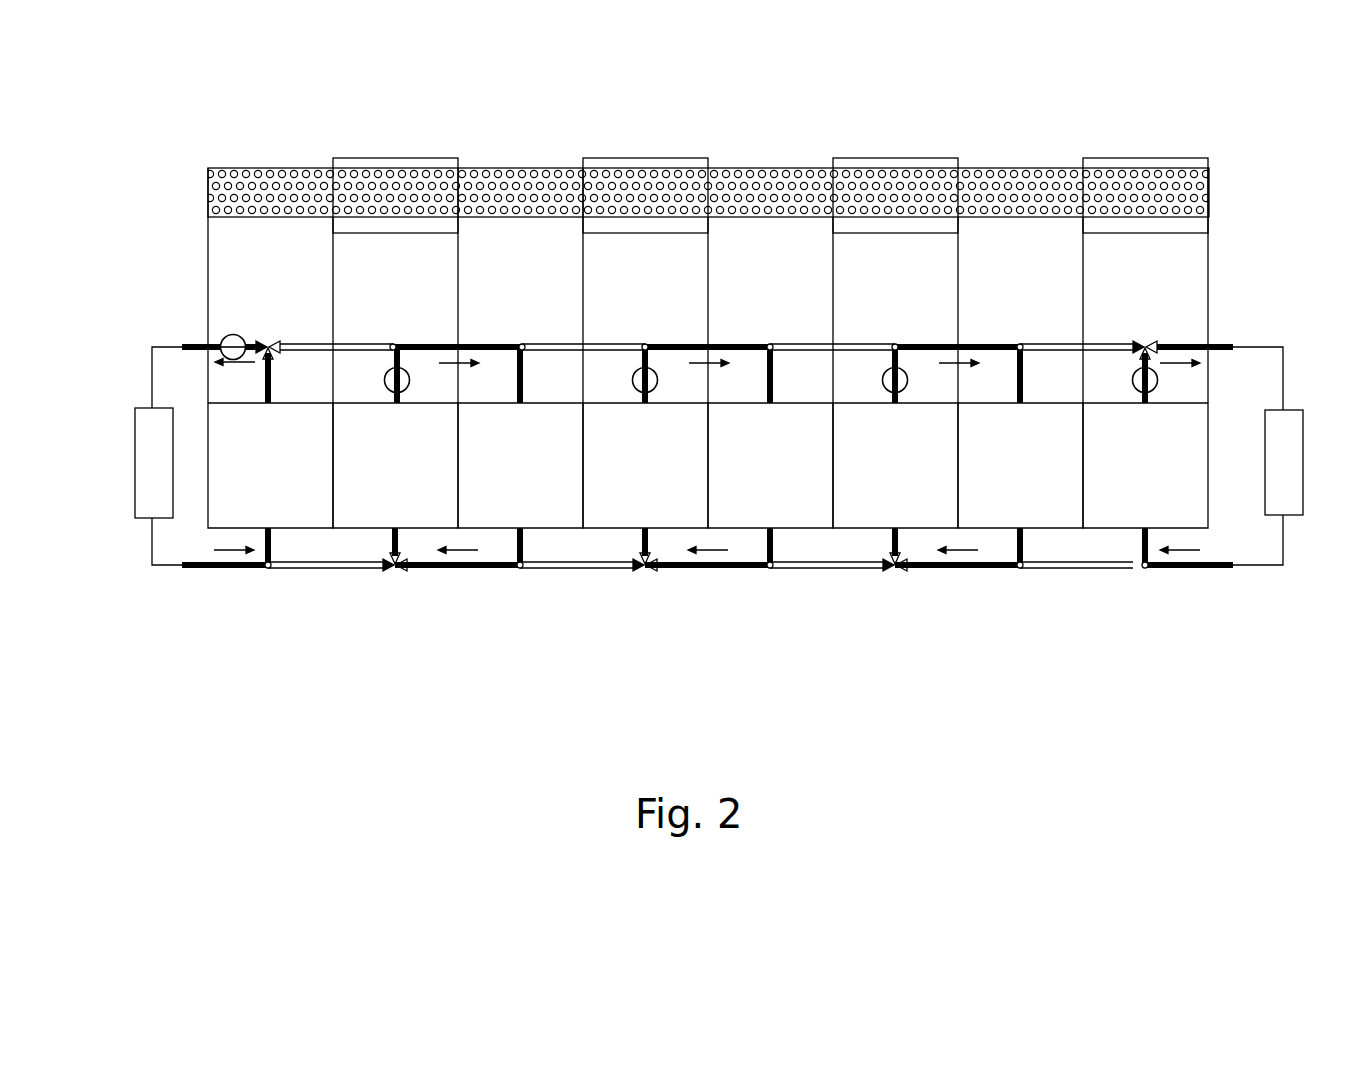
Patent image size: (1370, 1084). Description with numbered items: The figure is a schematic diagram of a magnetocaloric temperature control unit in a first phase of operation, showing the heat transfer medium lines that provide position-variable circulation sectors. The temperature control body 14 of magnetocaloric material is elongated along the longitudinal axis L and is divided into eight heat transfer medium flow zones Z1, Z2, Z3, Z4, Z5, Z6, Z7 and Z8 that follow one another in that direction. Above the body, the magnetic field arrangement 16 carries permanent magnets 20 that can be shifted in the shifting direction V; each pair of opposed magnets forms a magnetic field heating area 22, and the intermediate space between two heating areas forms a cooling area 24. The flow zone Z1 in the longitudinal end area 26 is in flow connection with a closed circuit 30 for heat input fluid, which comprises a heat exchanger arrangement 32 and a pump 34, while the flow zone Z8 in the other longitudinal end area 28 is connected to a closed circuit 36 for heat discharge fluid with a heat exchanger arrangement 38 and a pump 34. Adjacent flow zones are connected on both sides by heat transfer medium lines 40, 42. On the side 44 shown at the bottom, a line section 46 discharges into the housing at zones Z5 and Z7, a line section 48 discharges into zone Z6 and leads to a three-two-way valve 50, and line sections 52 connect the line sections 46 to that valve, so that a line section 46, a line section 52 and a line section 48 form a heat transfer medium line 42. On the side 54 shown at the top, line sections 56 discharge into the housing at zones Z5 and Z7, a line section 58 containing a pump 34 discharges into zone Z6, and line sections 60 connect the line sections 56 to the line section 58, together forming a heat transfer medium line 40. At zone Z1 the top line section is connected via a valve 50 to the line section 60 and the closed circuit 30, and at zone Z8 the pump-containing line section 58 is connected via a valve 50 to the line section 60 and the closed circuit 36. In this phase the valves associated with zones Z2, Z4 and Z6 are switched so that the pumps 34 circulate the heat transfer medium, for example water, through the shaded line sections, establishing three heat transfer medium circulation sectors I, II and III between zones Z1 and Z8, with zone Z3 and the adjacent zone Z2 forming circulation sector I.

The temperature control body 14 is at (250, 166).
The magnetic field arrangement 16 is at (935, 135).
The permanent magnets 20 is at (371, 156).
The magnetic field heating area 22 is at (426, 140).
The cooling area 24 is at (504, 150).
The longitudinal end area 26 is at (196, 624).
The longitudinal end area 28 is at (1263, 588).
The closed circuit for heat input fluid 30 is at (130, 555).
The heat exchanger arrangement 32 is at (133, 449).
The pump 34 is at (230, 335).
The closed circuit for heat discharge fluid 36 is at (1302, 336).
The heat exchanger arrangement 38 is at (1305, 440).
The heat transfer medium line 40 is at (972, 335).
The heat transfer medium line 42 is at (1119, 578).
The side of the temperature control body 44 is at (872, 700).
The line section 46 is at (283, 545).
The line section 48 is at (391, 540).
The 3/2-way valve 50 is at (271, 340).
The line section 52 is at (487, 572).
The side of the temperature control body 54 is at (797, 248).
The line section 56 is at (275, 375).
The line section 58 is at (401, 350).
The line section 60 is at (340, 345).
The heat transfer medium flow zone Z1 is at (301, 540).
The heat transfer medium flow zone Z2 is at (421, 540).
The heat transfer medium flow zone Z3 is at (556, 540).
The heat transfer medium flow zone Z4 is at (671, 540).
The heat transfer medium flow zone Z5 is at (809, 540).
The heat transfer medium flow zone Z6 is at (949, 540).
The heat transfer medium flow zone Z7 is at (1111, 540).
The heat transfer medium flow zone Z8 is at (1211, 540).
The heat transfer medium circulation sector I is at (469, 630).
The heat transfer medium circulation sector II is at (726, 326).
The heat transfer medium circulation sector III is at (958, 712).
The longitudinal axis of the temperature control body L is at (655, 740).
The shifting direction V is at (1055, 138).